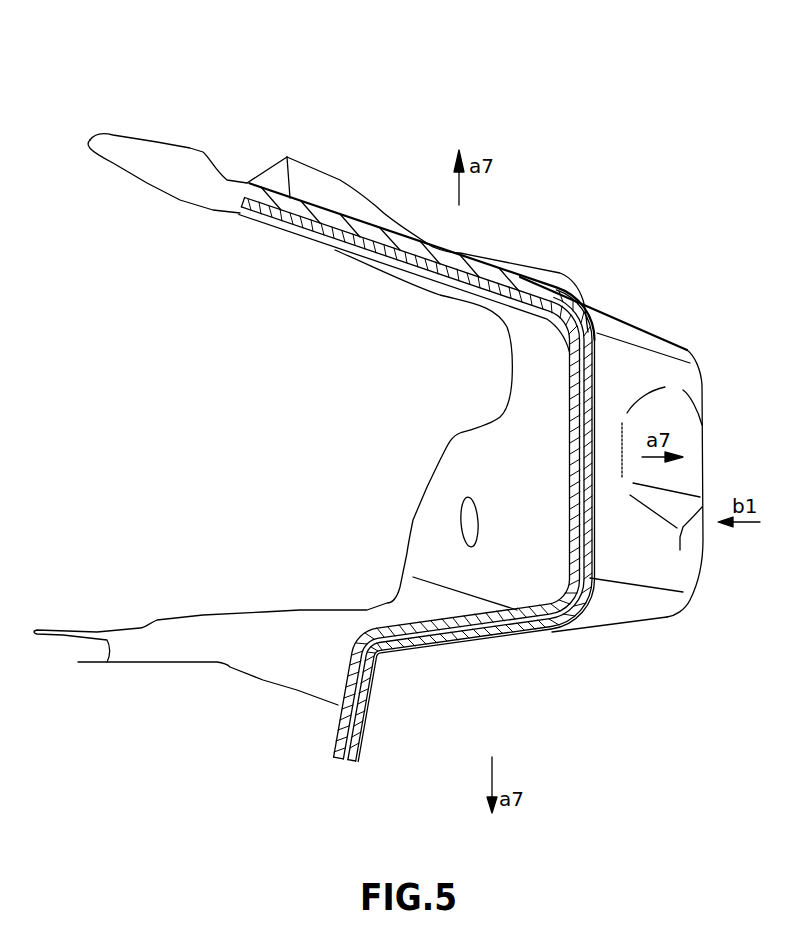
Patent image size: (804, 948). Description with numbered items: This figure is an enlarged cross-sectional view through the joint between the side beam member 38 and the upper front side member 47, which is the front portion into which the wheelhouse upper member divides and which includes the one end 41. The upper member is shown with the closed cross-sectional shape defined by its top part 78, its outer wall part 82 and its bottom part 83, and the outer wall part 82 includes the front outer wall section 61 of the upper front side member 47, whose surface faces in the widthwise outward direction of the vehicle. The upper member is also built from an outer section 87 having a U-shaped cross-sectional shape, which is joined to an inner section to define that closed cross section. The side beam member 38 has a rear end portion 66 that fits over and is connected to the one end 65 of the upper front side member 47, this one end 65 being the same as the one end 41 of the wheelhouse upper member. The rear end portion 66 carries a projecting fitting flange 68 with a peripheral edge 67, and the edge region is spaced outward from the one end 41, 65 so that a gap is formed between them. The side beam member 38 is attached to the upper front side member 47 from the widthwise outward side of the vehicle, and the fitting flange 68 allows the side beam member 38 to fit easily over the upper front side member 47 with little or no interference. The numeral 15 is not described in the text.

The vehicle body side structure 15 is at (417, 95).
The side beam member 38 is at (585, 325).
The one end 41 is at (617, 580).
The upper front side member 47 is at (692, 346).
The front outer wall section 61 is at (703, 388).
The one end of the upper front side member 65 is at (610, 460).
The rear end portion 66 is at (633, 309).
The peripheral edge 67 is at (633, 309).
The fitting flange 68 is at (598, 373).
The top part 78 is at (483, 288).
The outer wall part 82 is at (570, 445).
The bottom part 83 is at (472, 640).
The outer section 87 is at (403, 297).